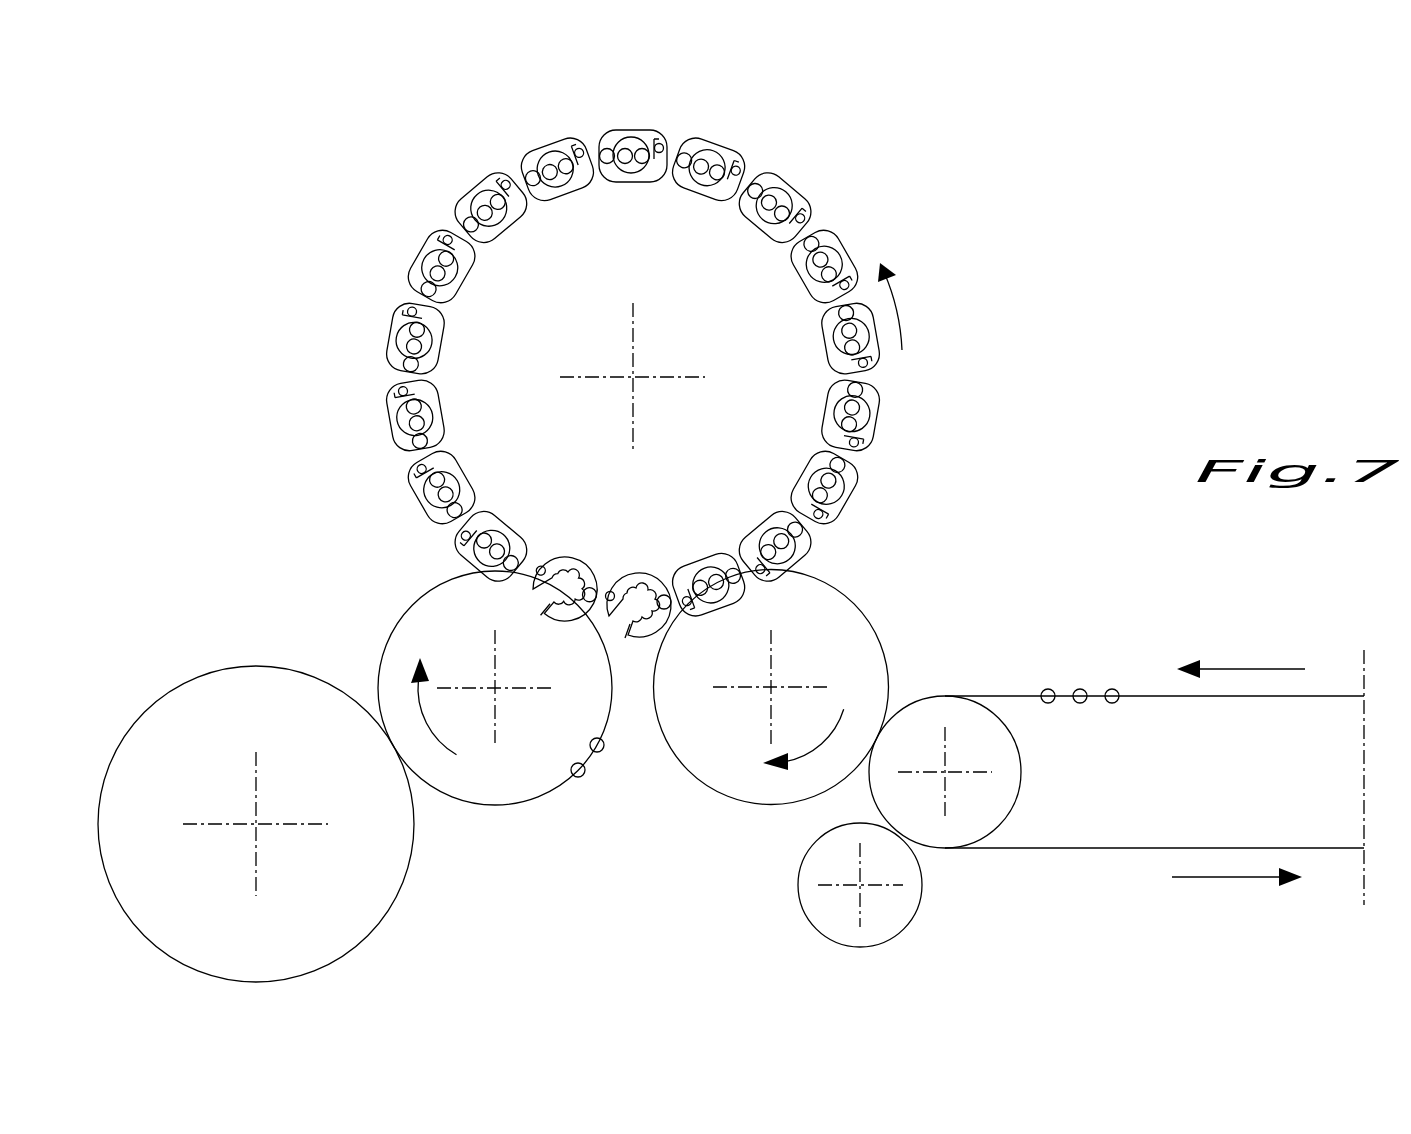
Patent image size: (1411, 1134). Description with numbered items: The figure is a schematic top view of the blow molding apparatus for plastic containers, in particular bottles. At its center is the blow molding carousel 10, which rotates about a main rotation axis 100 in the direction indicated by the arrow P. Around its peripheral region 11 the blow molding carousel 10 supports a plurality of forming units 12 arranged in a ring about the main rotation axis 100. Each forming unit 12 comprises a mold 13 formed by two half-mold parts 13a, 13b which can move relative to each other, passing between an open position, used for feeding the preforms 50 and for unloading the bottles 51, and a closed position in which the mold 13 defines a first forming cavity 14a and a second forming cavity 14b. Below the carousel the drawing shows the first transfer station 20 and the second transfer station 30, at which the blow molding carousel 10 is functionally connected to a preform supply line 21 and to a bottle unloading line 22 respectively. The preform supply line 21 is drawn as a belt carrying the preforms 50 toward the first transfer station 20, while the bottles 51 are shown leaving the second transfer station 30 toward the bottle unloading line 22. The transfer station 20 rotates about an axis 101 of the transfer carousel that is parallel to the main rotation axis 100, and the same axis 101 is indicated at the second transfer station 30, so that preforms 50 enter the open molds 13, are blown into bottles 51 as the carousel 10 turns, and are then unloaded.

The blow molding carousel 10 is at (860, 186).
The peripheral region 11 is at (895, 375).
The forming unit 12 is at (718, 140).
The mold 13 is at (636, 559).
The half-mold part 13a is at (612, 572).
The half-mold part 13b is at (668, 625).
The first forming cavity 14a is at (507, 543).
The second forming cavity 14b is at (466, 535).
The first transfer station 20 is at (711, 808).
The preform supply line 21 is at (1123, 722).
The bottle unloading line 22 is at (248, 645).
The second transfer station 30 is at (527, 814).
The preform 50 is at (1050, 689).
The bottle 51 is at (581, 778).
The main rotation axis 100 is at (636, 376).
The axis of the transfer carousel 101 is at (494, 687).
The direction of rotation P is at (897, 315).